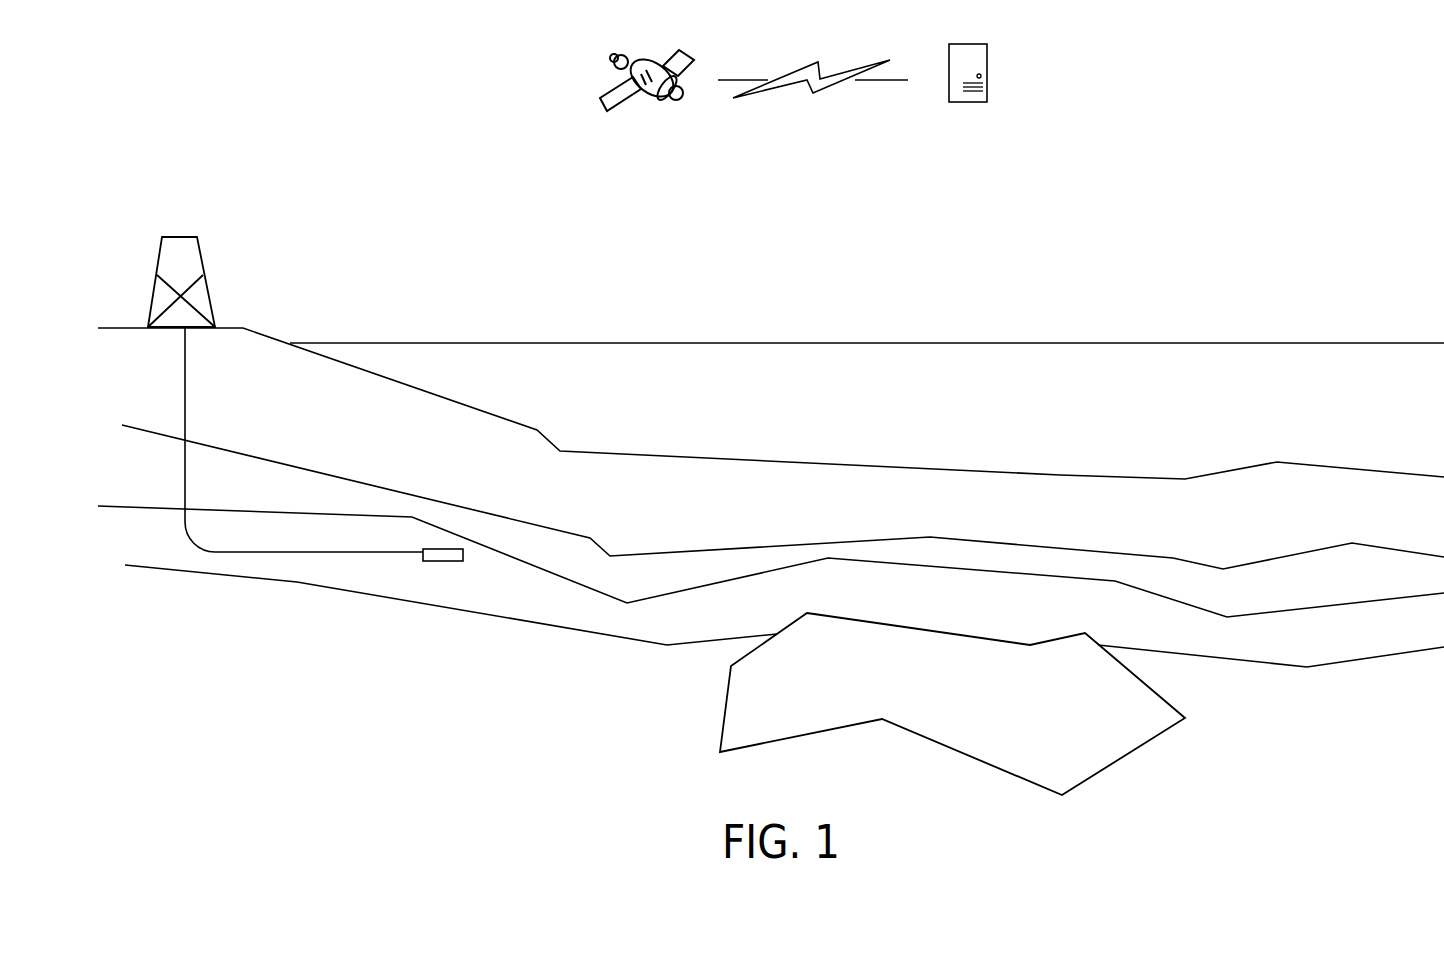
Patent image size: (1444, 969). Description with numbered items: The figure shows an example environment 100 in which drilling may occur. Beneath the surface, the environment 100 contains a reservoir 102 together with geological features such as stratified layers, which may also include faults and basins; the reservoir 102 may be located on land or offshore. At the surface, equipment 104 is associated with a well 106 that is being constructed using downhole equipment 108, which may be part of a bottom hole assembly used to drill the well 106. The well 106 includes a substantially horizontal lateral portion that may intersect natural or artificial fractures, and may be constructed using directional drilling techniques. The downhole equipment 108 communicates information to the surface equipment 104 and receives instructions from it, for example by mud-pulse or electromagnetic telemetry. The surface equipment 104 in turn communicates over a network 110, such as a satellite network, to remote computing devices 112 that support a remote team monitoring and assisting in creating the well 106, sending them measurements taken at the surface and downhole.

The environment 100 is at (243, 76).
The reservoir 102 is at (952, 704).
The surface equipment 104 is at (196, 282).
The well 106 is at (304, 440).
The downhole equipment 108 is at (443, 568).
The network 110 is at (813, 89).
The remote computing devices 112 is at (968, 89).